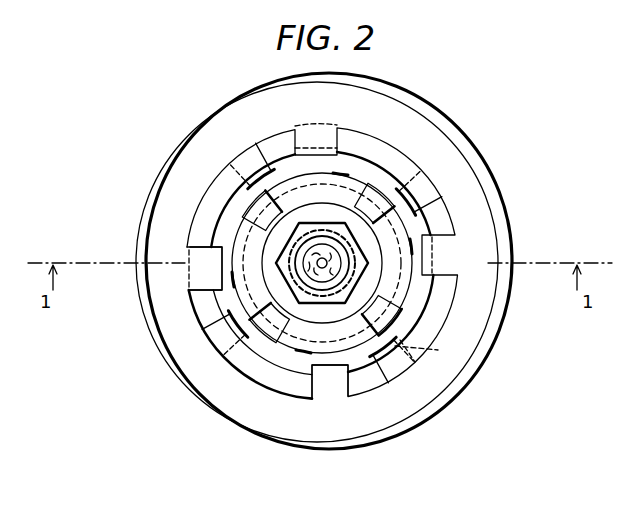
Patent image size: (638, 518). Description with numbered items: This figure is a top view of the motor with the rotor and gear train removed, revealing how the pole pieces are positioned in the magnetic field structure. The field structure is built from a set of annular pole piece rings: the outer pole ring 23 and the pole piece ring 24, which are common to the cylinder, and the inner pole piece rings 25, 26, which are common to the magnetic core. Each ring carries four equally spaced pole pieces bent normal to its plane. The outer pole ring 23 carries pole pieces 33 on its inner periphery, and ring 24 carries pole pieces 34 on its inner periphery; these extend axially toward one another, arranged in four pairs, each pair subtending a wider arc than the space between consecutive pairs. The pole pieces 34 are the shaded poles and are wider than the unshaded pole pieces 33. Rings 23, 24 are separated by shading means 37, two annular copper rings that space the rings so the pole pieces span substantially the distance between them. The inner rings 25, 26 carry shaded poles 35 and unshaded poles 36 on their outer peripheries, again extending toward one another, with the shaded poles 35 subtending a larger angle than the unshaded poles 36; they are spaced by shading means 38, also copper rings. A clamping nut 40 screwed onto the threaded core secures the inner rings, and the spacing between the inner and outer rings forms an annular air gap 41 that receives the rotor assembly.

The outer pole ring 23 is at (433, 348).
The pole piece ring 24 is at (318, 366).
The inner pole piece ring 25 is at (400, 352).
The inner pole piece ring 26 is at (424, 310).
The pole pieces 33 is at (387, 353).
The pole pieces 34 is at (310, 363).
The pole pieces 35 is at (380, 180).
The pole pieces 36 is at (348, 170).
The shading means 37 is at (203, 310).
The shading means 38 is at (392, 237).
The clamping nut 40 is at (268, 358).
The annular air gap 41 is at (203, 277).